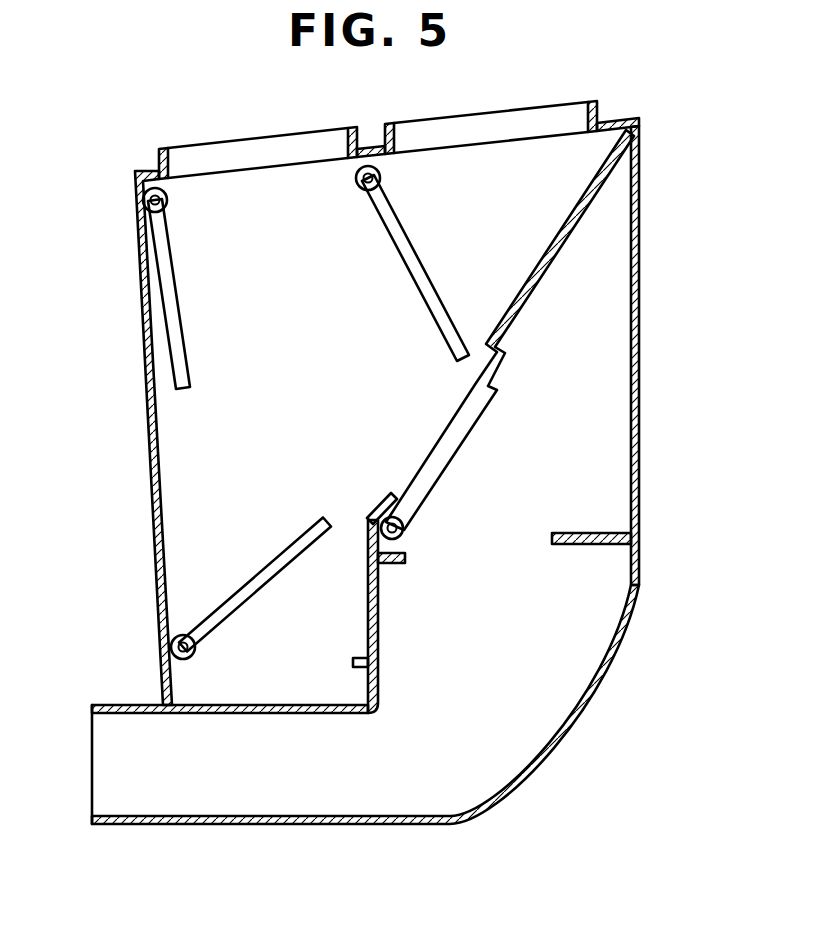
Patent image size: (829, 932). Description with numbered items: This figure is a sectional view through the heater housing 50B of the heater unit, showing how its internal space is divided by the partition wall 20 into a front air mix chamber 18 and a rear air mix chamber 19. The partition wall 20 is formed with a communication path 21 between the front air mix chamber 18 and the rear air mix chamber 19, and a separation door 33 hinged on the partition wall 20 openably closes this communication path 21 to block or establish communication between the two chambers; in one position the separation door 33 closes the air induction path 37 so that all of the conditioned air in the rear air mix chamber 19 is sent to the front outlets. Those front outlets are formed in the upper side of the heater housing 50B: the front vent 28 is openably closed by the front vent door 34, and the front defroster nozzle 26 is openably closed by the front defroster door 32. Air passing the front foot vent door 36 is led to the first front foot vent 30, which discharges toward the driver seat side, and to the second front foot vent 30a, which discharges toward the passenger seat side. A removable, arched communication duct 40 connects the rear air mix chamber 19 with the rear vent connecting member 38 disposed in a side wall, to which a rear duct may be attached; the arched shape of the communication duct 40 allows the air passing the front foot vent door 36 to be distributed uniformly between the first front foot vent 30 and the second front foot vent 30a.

The front air mix chamber 18 is at (278, 344).
The rear air mix chamber 19 is at (508, 504).
The partition wall 20 is at (380, 610).
The communication path 21 is at (430, 434).
The front defroster nozzle 26 is at (473, 116).
The front vent 28 is at (254, 137).
The first front foot vent 30 is at (250, 696).
The second front foot vent 30a is at (334, 696).
The front defroster door 32 is at (413, 247).
The separation door 33 is at (469, 434).
The front vent door 34 is at (166, 330).
The front foot vent door 36 is at (268, 578).
The air induction path 37 is at (546, 631).
The rear vent connecting member 38 is at (92, 779).
The communication duct 40 is at (268, 714).
The heater housing 50B is at (641, 290).